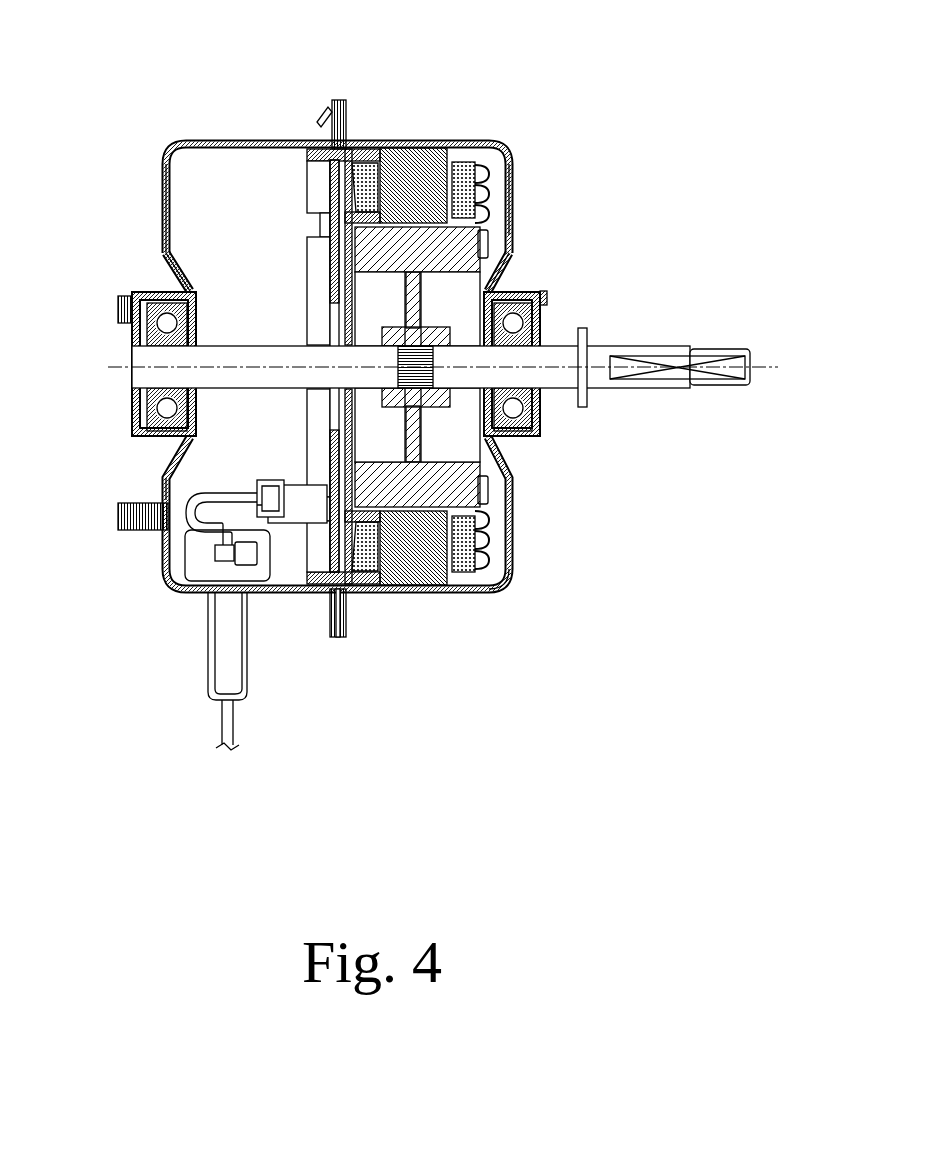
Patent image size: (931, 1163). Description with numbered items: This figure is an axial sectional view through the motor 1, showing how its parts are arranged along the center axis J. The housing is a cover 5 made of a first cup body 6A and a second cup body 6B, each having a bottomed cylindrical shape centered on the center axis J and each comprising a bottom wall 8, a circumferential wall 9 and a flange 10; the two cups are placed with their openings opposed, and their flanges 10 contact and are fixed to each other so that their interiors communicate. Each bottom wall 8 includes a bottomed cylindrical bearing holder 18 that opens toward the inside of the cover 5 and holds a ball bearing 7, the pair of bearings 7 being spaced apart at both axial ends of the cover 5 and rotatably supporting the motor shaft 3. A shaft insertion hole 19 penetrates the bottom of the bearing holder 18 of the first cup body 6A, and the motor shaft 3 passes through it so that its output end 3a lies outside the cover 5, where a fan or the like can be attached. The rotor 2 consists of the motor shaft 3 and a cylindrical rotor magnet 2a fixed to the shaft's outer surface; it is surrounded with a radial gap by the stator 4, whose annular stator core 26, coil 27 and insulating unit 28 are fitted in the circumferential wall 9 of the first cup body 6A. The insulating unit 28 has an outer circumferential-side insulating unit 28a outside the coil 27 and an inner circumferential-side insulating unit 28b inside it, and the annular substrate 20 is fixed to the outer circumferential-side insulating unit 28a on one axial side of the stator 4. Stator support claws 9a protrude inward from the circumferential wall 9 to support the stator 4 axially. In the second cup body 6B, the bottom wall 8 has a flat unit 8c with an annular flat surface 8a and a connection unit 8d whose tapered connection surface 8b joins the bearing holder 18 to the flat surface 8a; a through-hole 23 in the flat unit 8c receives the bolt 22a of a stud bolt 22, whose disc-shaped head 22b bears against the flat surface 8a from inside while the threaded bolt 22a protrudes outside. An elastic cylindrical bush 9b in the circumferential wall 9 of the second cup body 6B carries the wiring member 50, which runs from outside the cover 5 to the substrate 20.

The motor 1 is at (650, 74).
The rotor 2 is at (465, 244).
The rotor magnet 2a is at (490, 494).
The motor shaft 3 is at (598, 355).
The output end 3a is at (724, 398).
The stator 4 is at (430, 167).
The cover 5 is at (457, 756).
The first cup body 6A is at (428, 595).
The second cup body 6B is at (266, 595).
The bearing 7 is at (150, 440).
The bottom wall 8 is at (161, 493).
The flat surface 8a is at (163, 166).
The connection surface 8b is at (166, 248).
The flat unit 8c is at (164, 212).
The connection unit 8d is at (168, 272).
The circumferential wall 9 is at (232, 140).
The stator support claw 9a is at (452, 595).
The bush 9b is at (222, 657).
The flange 10 is at (334, 641).
The bearing holder 18 is at (172, 292).
The shaft insertion hole 19 is at (548, 385).
The substrate 20 is at (324, 256).
The stud bolt 22 is at (122, 537).
The bolt 22a is at (141, 537).
The head 22b is at (165, 487).
The through-hole 23 is at (179, 580).
The stator core 26 is at (416, 150).
The coil 27 is at (373, 155).
The insulating unit 28 is at (370, 150).
The outer circumferential-side insulating unit 28a is at (352, 150).
The inner circumferential-side insulating unit 28b is at (323, 153).
The wiring member 50 is at (225, 731).
The center axis J is at (767, 357).